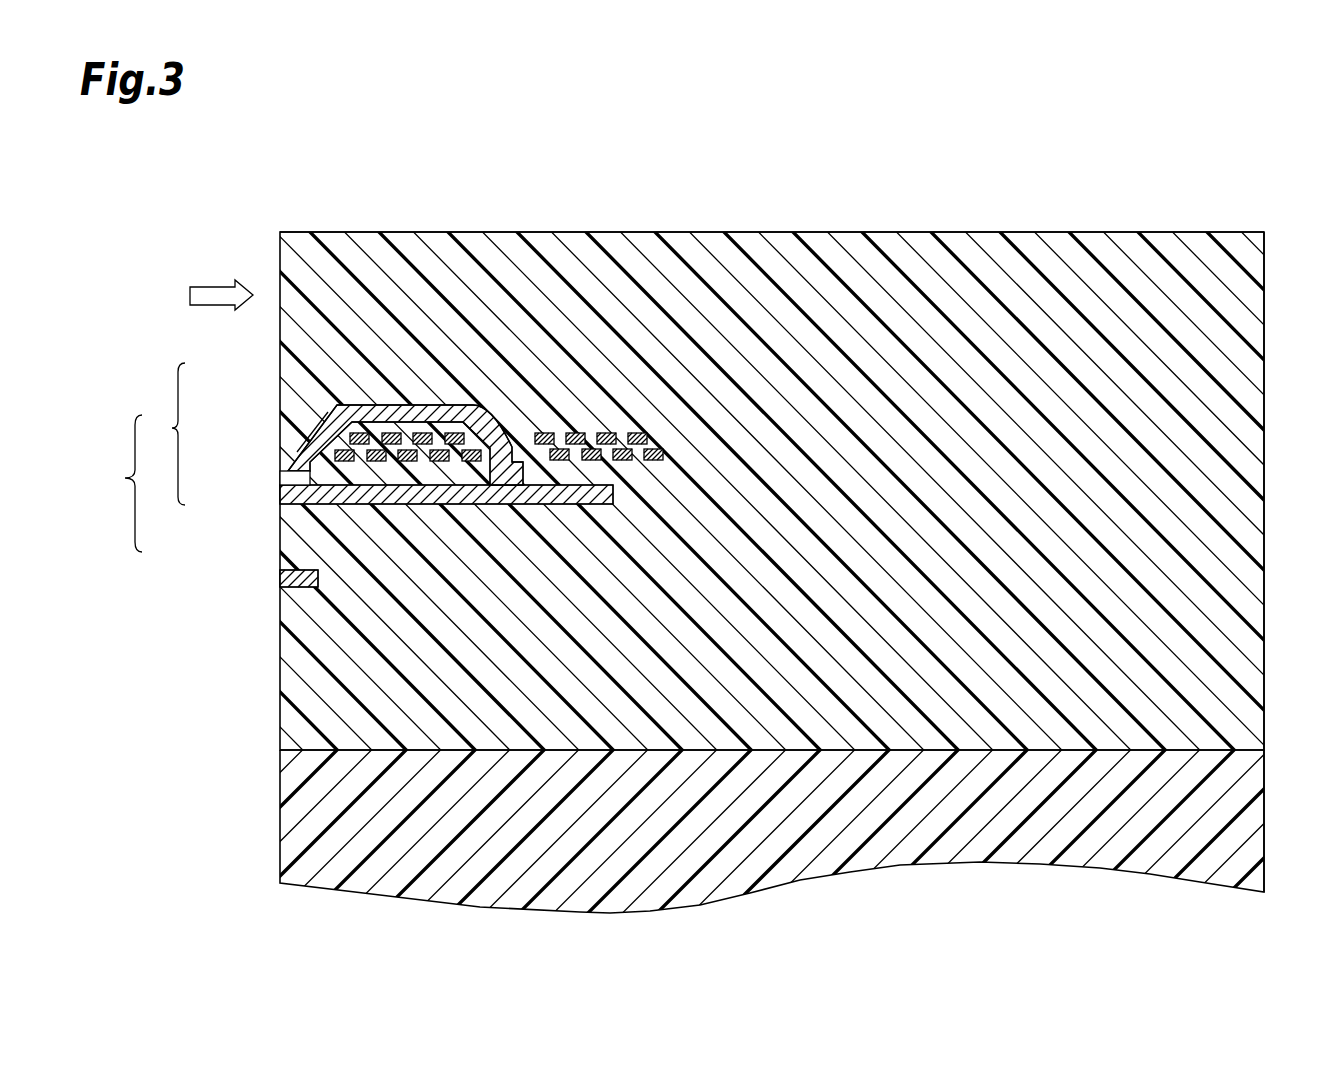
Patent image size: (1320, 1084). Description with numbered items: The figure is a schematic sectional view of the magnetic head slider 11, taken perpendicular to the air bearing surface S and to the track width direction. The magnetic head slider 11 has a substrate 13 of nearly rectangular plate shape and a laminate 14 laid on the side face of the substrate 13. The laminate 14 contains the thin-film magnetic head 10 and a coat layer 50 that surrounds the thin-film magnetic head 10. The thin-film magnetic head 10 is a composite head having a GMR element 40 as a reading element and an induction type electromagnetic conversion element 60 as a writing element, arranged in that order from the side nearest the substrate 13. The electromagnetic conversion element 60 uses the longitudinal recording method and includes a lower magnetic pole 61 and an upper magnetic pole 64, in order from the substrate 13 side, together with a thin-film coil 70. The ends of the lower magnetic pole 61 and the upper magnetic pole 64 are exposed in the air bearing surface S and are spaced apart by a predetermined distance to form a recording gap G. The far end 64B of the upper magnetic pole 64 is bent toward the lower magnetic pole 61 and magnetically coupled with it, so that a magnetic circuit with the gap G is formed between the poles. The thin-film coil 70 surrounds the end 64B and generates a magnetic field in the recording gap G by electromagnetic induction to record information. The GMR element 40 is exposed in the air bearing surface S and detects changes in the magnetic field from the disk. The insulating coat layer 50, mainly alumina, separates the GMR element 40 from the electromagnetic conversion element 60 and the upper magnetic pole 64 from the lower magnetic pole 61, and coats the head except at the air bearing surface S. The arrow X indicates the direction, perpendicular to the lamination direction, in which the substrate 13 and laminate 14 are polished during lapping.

The thin-film magnetic head 10 is at (119, 483).
The magnetic head slider 11 is at (166, 225).
The substrate 13 is at (288, 818).
The laminate 14 is at (1267, 513).
The GMR element 40 is at (280, 558).
The coat layer 50 is at (407, 240).
The electromagnetic conversion element 60 is at (162, 434).
The lower magnetic pole 61 is at (280, 493).
The upper magnetic pole 64 is at (328, 412).
The end of the upper magnetic pole 64B is at (508, 437).
The thin-film coil 70 is at (360, 426).
The recording gap G is at (280, 478).
The air bearing surface S is at (270, 246).
The direction of arrow X is at (221, 284).